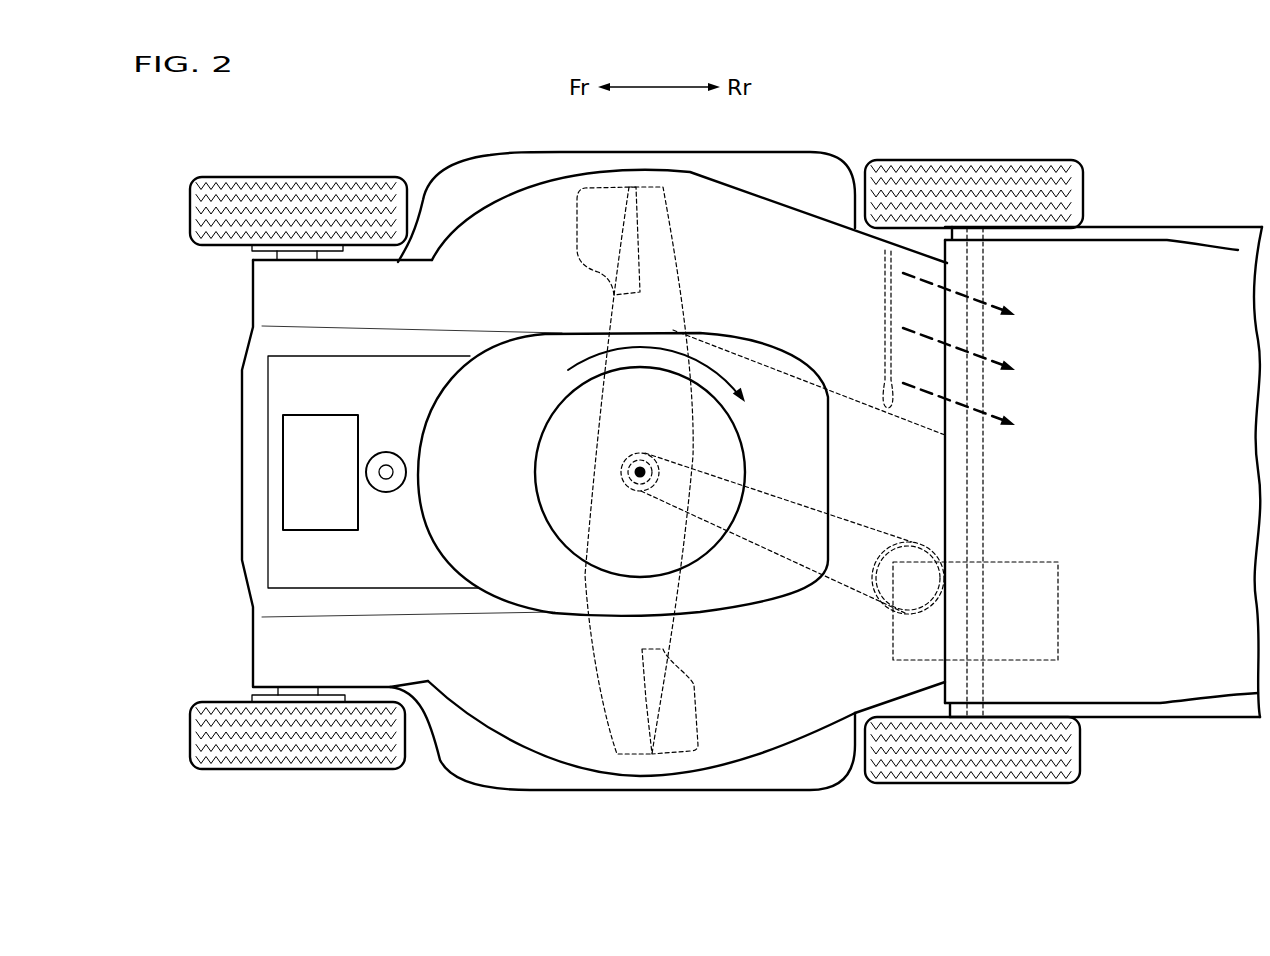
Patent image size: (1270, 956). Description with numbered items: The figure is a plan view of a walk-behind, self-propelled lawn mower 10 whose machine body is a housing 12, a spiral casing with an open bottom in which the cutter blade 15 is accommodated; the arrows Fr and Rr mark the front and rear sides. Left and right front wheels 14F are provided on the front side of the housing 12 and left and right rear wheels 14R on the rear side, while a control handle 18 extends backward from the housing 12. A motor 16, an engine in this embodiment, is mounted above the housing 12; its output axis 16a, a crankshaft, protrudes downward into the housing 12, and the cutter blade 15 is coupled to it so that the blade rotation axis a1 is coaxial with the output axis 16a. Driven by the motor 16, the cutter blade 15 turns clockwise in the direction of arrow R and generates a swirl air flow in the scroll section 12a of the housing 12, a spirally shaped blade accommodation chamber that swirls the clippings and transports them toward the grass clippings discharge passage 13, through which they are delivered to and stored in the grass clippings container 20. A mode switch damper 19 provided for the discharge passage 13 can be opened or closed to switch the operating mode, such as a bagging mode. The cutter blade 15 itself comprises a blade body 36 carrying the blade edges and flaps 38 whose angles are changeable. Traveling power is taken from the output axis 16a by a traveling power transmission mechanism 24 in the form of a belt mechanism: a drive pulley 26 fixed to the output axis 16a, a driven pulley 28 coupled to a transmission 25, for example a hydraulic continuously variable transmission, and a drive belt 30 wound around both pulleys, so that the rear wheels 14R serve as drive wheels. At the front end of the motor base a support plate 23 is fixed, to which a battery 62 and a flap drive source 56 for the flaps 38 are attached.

The lawn mower 10 is at (358, 97).
The housing 12 is at (497, 196).
The scroll section 12a is at (481, 240).
The grass clippings discharge passage 13 is at (853, 404).
The front wheels 14F is at (257, 176).
The rear wheels 14R is at (968, 162).
The cutter blade 15 is at (598, 683).
The motor 16 is at (534, 449).
The output axis 16a is at (653, 459).
The control handle 18 is at (1213, 706).
The mode switch damper 19 is at (884, 323).
The grass clippings container 20 is at (1172, 262).
The support plate 23 is at (396, 380).
The traveling power transmission mechanism 24 is at (835, 593).
The transmission 25 is at (1062, 590).
The drive pulley 26 is at (668, 497).
The driven pulley 28 is at (884, 542).
The drive belt 30 is at (790, 492).
The blade body 36 is at (627, 630).
The flaps 38 is at (598, 243).
The flap drive source 56 is at (388, 451).
The battery 62 is at (350, 414).
The blade rotation axis a1 is at (639, 466).